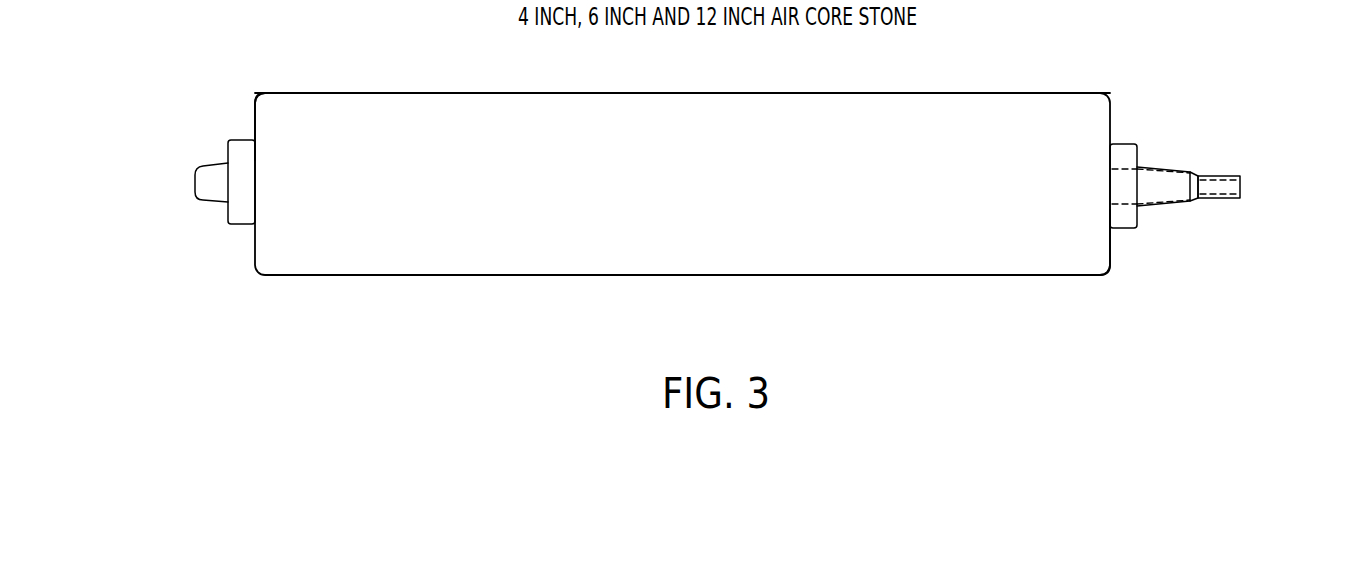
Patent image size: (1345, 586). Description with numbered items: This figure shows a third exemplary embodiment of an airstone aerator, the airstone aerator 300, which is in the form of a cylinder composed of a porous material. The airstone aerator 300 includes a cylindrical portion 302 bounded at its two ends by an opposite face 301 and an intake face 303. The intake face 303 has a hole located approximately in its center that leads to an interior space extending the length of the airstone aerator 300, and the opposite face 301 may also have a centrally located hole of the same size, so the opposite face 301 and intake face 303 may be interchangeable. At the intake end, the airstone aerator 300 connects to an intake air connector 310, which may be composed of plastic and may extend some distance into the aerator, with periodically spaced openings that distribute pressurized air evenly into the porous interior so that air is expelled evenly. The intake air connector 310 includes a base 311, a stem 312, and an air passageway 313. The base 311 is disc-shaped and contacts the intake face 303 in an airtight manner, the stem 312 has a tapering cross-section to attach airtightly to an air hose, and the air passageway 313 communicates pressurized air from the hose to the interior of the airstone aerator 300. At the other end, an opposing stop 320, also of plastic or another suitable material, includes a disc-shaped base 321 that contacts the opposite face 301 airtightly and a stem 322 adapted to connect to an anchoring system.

The airstone aerator 300 is at (733, 293).
The opposite face 301 is at (255, 114).
The cylindrical portion 302 is at (570, 92).
The intake face 303 is at (1110, 248).
The intake air connector 310 is at (1209, 217).
The base 311 is at (1137, 157).
The stem 312 is at (1198, 175).
The air passageway 313 is at (1240, 187).
The opposing stop 320 is at (199, 225).
The base 321 is at (238, 227).
The stem 322 is at (208, 183).